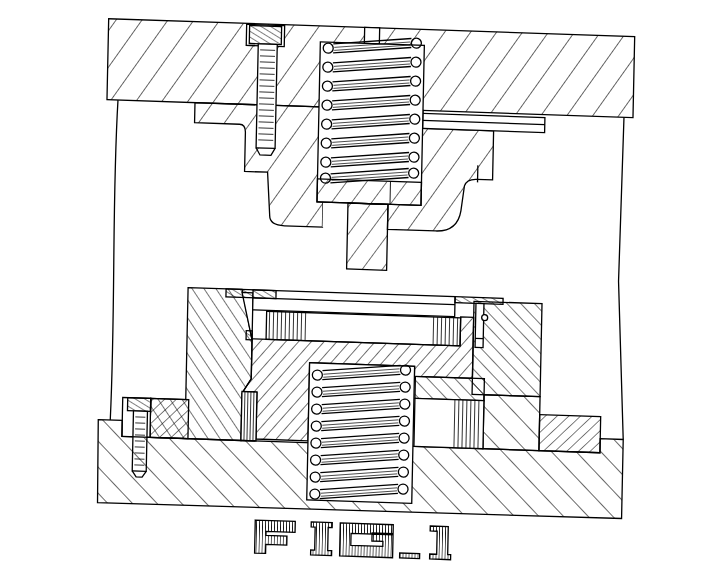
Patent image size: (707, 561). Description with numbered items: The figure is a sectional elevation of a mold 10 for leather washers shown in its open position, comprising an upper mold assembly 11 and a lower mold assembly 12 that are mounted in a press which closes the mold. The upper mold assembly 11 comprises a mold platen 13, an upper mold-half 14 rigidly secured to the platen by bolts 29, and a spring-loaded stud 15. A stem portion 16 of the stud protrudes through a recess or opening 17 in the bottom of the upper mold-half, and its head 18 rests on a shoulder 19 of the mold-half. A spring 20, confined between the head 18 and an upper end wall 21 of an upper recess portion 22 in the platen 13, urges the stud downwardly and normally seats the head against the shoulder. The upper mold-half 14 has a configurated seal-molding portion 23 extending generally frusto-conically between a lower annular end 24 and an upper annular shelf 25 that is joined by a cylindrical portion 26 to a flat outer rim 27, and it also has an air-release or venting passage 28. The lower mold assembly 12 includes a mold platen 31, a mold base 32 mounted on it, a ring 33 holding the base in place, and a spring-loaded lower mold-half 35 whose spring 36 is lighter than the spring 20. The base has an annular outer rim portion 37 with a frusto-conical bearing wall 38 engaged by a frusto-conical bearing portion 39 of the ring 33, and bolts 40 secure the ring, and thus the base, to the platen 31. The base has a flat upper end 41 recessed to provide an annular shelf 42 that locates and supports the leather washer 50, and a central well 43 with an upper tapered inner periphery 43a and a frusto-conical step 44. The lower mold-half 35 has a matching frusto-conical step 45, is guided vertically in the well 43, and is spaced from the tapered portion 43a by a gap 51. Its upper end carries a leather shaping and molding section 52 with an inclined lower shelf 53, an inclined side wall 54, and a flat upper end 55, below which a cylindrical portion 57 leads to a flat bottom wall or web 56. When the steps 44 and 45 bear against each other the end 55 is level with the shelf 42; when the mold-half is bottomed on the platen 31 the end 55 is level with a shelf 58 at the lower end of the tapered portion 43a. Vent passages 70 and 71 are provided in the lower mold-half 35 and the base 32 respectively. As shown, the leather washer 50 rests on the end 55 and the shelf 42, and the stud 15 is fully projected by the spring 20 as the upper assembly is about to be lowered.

The mold 10 is at (345, 261).
The upper mold assembly 11 is at (197, 118).
The lower mold assembly 12 is at (339, 368).
The mold platen 13 is at (632, 64).
The upper mold-half 14 is at (490, 183).
The spring-loaded stud 15 is at (363, 234).
The stem portion 16 is at (363, 253).
The recess or opening 17 is at (351, 228).
The head 18 is at (394, 197).
The shoulder 19 is at (334, 184).
The spring 20 is at (387, 103).
The upper end wall 21 is at (389, 32).
The upper recess portion 22 is at (344, 58).
The seal-molding portion 23 is at (462, 175).
The lower annular end 24 is at (464, 212).
The upper annular shelf 25 is at (491, 169).
The cylindrical portion 26 is at (496, 152).
The flat outer rim 27 is at (512, 116).
The air-release or venting passage 28 is at (540, 106).
The bolts 29 is at (264, 88).
The mold platen 31 is at (123, 464).
The mold base 32 is at (237, 427).
The ring 33 is at (158, 395).
The lower mold-half 35 is at (285, 349).
The spring 36 is at (424, 436).
The annular outer rim portion 37 is at (169, 434).
The frusto-conical bearing wall 38 is at (181, 409).
The frusto-conical bearing portion 39 is at (187, 419).
The bolts 40 is at (138, 400).
The flat upper end 41 is at (231, 287).
The annular shelf 42 is at (236, 282).
The central well 43 is at (485, 430).
The upper tapered inner periphery 43a is at (495, 301).
The frusto-conical step 44 is at (280, 352).
The frusto-conical step 45 is at (258, 366).
The leather washer 50 is at (296, 285).
The gap 51 is at (256, 283).
The leather shaping and molding section 52 is at (486, 287).
The inclined lower shelf 53 is at (482, 300).
The inclined side wall 54 is at (436, 285).
The upper end 55 is at (286, 280).
The flat bottom wall or web 56 is at (363, 337).
The cylindrical portion 57 is at (364, 322).
The shelf 58 is at (254, 332).
The vent passage 70 is at (507, 348).
The vent passage 71 is at (540, 380).